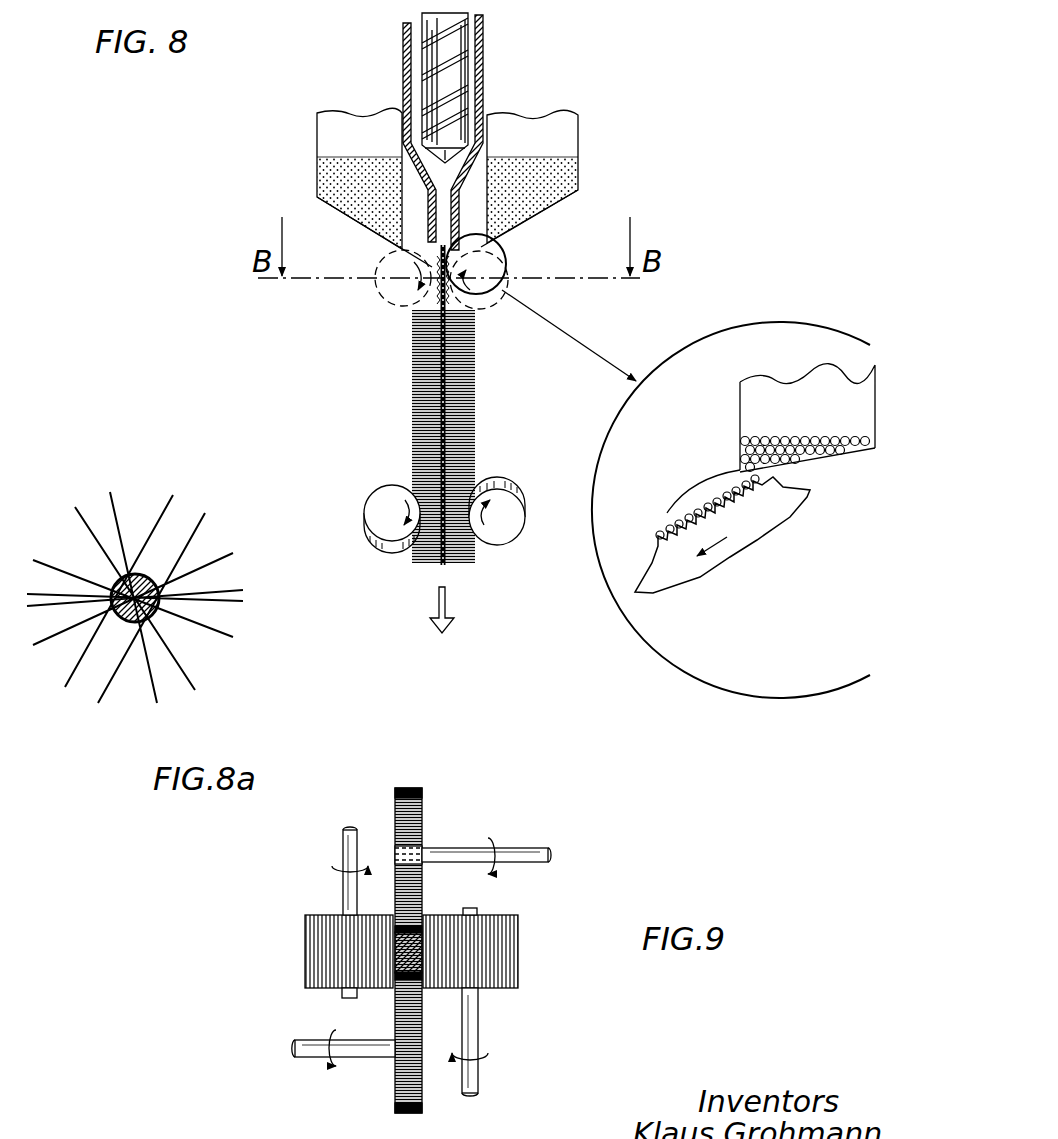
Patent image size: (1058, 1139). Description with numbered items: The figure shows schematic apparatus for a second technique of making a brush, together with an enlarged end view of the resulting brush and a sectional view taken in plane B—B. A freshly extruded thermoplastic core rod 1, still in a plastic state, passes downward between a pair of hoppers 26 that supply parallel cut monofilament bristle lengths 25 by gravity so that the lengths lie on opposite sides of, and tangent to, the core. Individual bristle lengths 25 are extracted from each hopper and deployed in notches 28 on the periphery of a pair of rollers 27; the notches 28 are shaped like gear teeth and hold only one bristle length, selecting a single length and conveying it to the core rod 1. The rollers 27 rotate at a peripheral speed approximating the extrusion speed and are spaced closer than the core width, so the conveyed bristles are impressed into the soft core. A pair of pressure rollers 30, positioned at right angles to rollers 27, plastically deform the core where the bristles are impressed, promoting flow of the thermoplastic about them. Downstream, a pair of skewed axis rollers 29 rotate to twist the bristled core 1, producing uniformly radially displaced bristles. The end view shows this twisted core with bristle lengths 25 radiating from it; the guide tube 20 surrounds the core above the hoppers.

In FIG. 8, the thermoplastic core rod 1 is at (441, 268).
In FIG. 8A, the thermoplastic core rod 1 is at (150, 574).
In FIG. 9, the thermoplastic core rod 1 is at (418, 960).
In FIG. 8, the guide tube 20 is at (483, 74).
In FIG. 8, the cut monofilament bristle lengths 25 is at (540, 157).
In FIG. 8A, the cut monofilament bristle lengths 25 is at (98, 703).
In FIG. 9, the cut monofilament bristle lengths 25 is at (392, 995).
In FIG. 8, the hoppers 26 is at (317, 158).
In FIG. 8, the rollers 27 is at (388, 301).
In FIG. 9, the rollers 27 is at (305, 940).
In FIG. 8, the notches 28 is at (467, 257).
In FIG. 9, the notches 28 is at (342, 965).
In FIG. 8, the skewed axis rollers 29 is at (364, 510).
In FIG. 9, the pressure rollers 30 is at (418, 801).